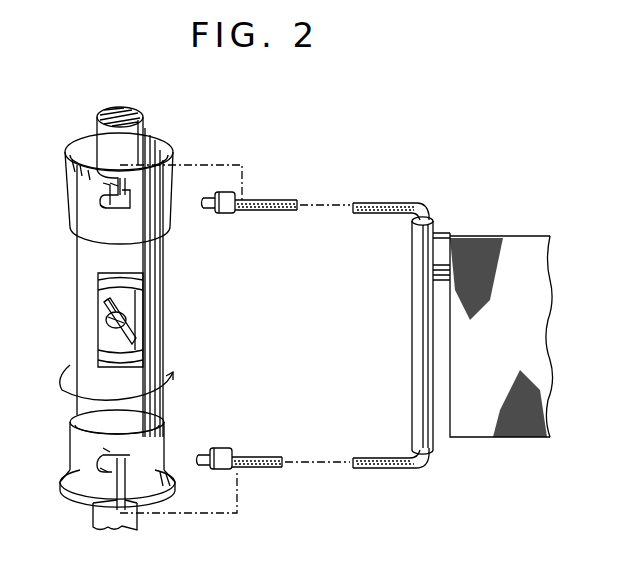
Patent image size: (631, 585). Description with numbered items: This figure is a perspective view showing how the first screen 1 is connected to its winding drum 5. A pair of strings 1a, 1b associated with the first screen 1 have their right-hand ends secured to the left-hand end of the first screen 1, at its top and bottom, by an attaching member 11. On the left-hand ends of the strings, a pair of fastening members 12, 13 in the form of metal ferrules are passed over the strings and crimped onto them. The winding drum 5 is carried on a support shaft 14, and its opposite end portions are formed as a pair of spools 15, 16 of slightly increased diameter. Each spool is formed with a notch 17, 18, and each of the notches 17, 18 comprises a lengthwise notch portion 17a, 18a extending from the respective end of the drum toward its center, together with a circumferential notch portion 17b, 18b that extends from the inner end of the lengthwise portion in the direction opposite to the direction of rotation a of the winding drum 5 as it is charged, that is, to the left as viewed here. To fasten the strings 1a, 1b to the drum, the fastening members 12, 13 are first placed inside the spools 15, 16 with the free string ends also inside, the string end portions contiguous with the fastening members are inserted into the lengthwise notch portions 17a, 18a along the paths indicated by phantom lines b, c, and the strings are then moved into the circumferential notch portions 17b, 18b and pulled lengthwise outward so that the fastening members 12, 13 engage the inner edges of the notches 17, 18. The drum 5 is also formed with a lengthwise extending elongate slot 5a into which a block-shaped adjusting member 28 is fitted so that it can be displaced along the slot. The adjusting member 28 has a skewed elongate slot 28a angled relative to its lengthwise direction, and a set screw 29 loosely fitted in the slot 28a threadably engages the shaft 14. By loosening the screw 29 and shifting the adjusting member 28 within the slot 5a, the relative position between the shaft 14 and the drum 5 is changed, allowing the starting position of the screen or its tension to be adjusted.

The first screen 1 is at (490, 236).
The string 1a is at (363, 213).
The string 1b is at (367, 457).
The winding drum 5 is at (77, 342).
The elongate slot 5a is at (98, 278).
The attaching member 11 is at (412, 366).
The fastening member 12 is at (228, 213).
The fastening member 13 is at (220, 453).
The support shaft 14 is at (140, 128).
The spool 15 is at (78, 199).
The spool 16 is at (78, 442).
The notch 17 is at (131, 203).
The notch portion 17a is at (113, 188).
The notch portion 17b is at (100, 208).
The notch 18 is at (134, 466).
The notch portion 18a is at (104, 472).
The notch portion 18b is at (104, 449).
The adjusting member 28 is at (138, 335).
The skewed elongate slot 28a is at (104, 307).
The set screw 29 is at (126, 320).
The direction of rotation a is at (62, 390).
The phantom line b is at (202, 165).
The phantom line c is at (180, 513).